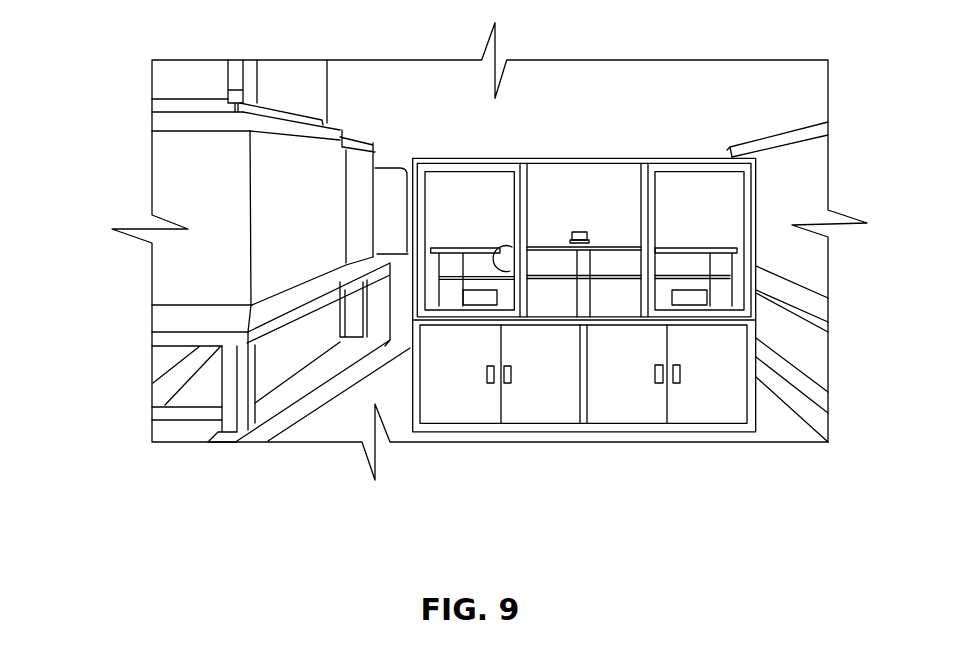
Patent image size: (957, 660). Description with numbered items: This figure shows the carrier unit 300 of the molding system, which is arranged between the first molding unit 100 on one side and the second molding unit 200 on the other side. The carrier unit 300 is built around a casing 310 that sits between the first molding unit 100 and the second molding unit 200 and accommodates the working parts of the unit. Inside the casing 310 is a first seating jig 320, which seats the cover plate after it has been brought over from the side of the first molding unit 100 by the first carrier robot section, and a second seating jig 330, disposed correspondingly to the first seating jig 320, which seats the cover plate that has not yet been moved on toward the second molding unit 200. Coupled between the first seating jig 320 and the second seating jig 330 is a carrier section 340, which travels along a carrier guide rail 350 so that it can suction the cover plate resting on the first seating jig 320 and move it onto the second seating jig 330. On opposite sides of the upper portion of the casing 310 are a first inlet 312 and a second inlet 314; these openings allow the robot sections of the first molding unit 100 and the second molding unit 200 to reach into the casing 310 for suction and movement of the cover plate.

The first molding unit 100 is at (245, 177).
The second molding unit 200 is at (797, 162).
The carrier unit 300 is at (593, 186).
The casing 310 is at (545, 405).
The first inlet 312 is at (438, 155).
The second inlet 314 is at (688, 157).
The first seating jig 320 is at (477, 298).
The second seating jig 330 is at (697, 298).
The carrier section 340 is at (583, 230).
The carrier guide rail 350 is at (480, 247).